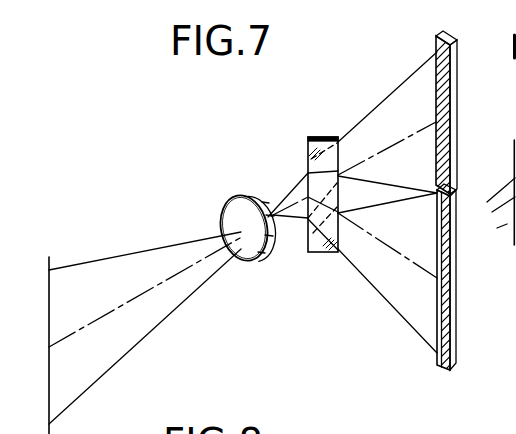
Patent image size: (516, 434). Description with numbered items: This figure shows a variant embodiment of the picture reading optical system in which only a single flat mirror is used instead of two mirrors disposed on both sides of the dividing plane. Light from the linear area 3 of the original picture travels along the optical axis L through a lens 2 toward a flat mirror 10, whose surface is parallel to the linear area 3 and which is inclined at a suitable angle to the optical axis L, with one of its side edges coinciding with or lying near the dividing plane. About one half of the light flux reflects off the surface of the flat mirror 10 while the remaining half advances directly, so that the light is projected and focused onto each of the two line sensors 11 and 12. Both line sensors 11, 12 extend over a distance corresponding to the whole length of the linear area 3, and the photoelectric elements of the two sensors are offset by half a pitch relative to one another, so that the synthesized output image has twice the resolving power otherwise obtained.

The linear area 3 is at (49, 317).
The optical axis L is at (103, 316).
The lens 2 is at (261, 256).
The flat mirror 10 is at (317, 253).
The line sensor 12 is at (456, 93).
The line sensor 11 is at (456, 319).